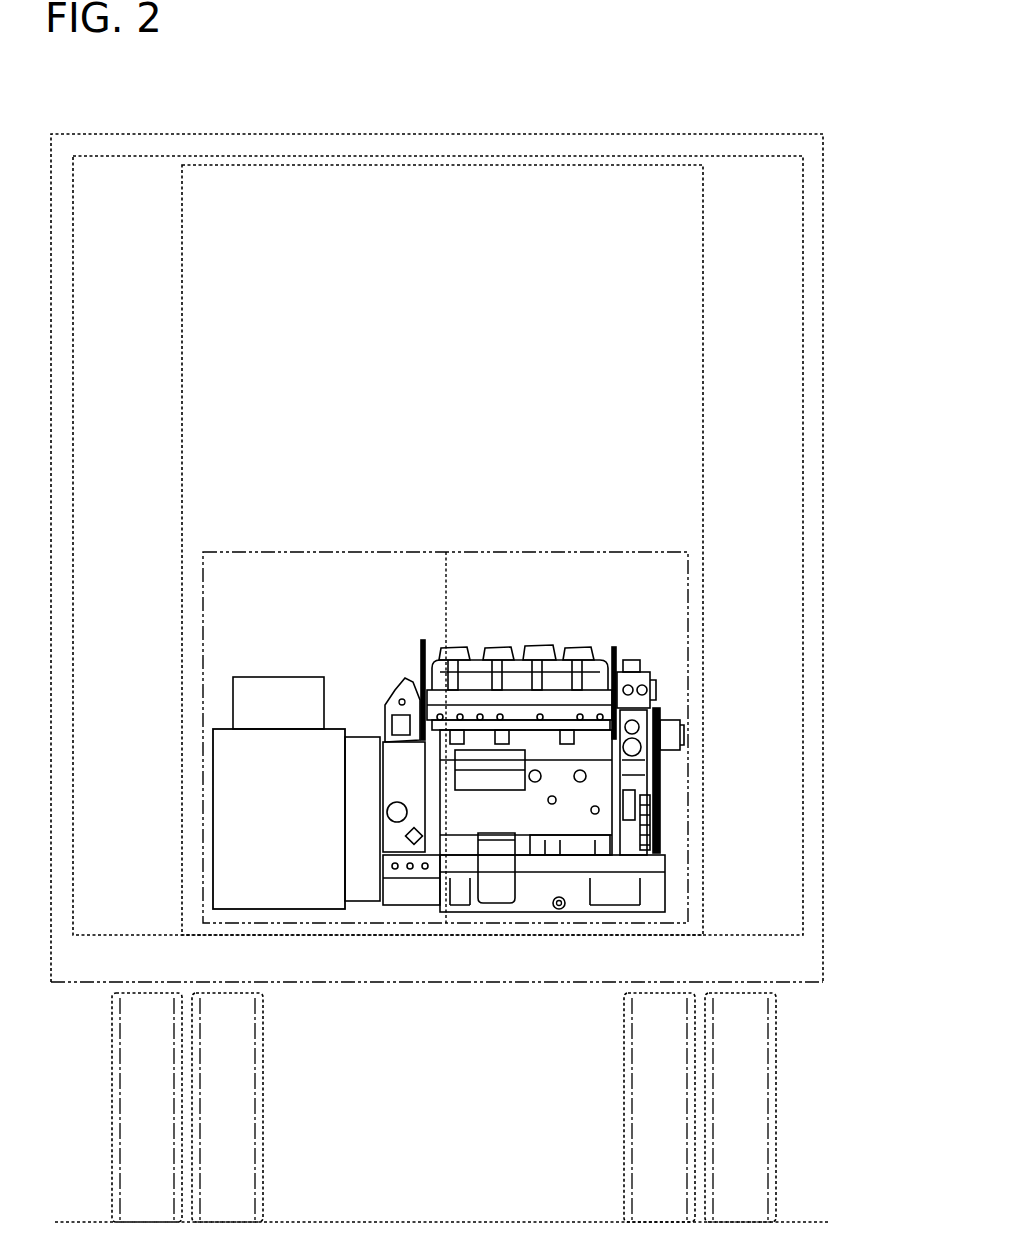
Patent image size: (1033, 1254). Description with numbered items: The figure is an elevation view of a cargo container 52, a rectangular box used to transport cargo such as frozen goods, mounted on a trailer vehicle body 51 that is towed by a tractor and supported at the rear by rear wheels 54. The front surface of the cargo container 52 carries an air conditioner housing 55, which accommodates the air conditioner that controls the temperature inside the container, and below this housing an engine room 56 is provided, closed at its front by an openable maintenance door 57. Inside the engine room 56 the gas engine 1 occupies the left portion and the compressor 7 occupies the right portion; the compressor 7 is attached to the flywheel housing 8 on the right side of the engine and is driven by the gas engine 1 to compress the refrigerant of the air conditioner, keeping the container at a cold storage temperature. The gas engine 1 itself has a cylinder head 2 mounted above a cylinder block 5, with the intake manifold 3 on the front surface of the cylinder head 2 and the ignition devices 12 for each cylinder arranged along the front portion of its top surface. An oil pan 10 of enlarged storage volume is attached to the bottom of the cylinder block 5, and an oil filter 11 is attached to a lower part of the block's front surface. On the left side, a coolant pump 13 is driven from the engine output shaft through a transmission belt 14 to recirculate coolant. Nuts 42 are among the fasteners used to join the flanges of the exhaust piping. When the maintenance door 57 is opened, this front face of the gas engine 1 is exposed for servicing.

The gas engine 1 is at (529, 613).
The cylinder head 2 is at (410, 690).
The intake manifold 3 is at (552, 655).
The cylinder block 5 is at (543, 890).
The compressor 7 is at (262, 742).
The flywheel housing 8 is at (405, 900).
The oil pan 10 is at (578, 895).
The oil filter 11 is at (512, 908).
The ignition devices 12 is at (480, 652).
The coolant pump 13 is at (655, 692).
The transmission belt 14 is at (664, 770).
The nuts 42 is at (620, 800).
The trailer vehicle body 51 is at (290, 983).
The cargo container 52 is at (714, 130).
The rear wheels 54 is at (265, 1128).
The air conditioner housing 55 is at (702, 262).
The engine room 56 is at (366, 586).
The maintenance door 57 is at (433, 552).